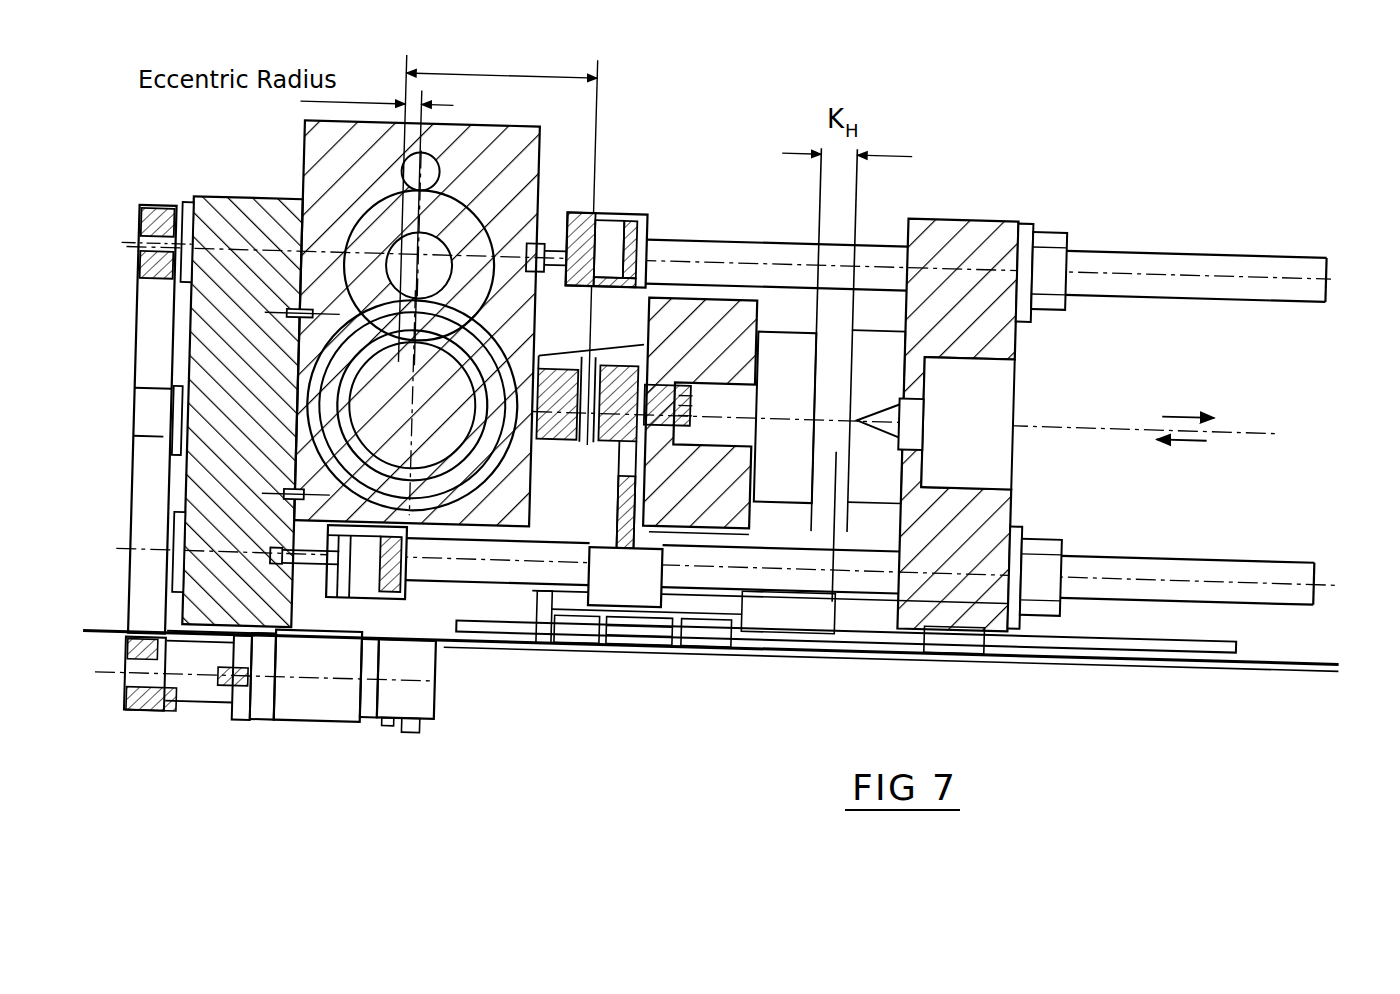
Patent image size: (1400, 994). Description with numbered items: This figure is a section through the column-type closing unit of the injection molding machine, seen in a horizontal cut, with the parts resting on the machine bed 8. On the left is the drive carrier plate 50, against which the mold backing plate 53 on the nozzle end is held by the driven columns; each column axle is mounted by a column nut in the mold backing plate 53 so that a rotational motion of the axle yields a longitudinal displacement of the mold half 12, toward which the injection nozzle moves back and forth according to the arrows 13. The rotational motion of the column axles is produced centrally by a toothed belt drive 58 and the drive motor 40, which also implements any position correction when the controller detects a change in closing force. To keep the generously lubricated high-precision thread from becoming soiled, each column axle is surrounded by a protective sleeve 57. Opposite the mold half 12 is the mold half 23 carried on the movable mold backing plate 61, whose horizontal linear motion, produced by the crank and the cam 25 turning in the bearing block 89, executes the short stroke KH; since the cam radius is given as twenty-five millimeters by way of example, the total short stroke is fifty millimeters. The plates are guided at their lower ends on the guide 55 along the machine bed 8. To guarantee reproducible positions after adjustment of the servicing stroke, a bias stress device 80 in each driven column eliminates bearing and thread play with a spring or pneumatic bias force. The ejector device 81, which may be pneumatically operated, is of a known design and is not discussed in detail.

The machine bed 8 is at (1332, 660).
The mold half 12 is at (934, 422).
The arrows 13 is at (1183, 414).
The mold half 23 is at (785, 418).
The cam 25 is at (373, 209).
The drive motor 40 is at (320, 712).
The drive carrier plate 50 is at (250, 197).
The mold backing plate on the nozzle end 53 is at (985, 222).
The guide 55 is at (1183, 640).
The protective sleeve 57 is at (760, 243).
The toothed belt drive 58 is at (125, 328).
The movable mold backing plate 61 is at (680, 300).
The bias stress device 80 is at (623, 210).
The ejector device 81 is at (606, 484).
The bearing block 89 is at (600, 120).